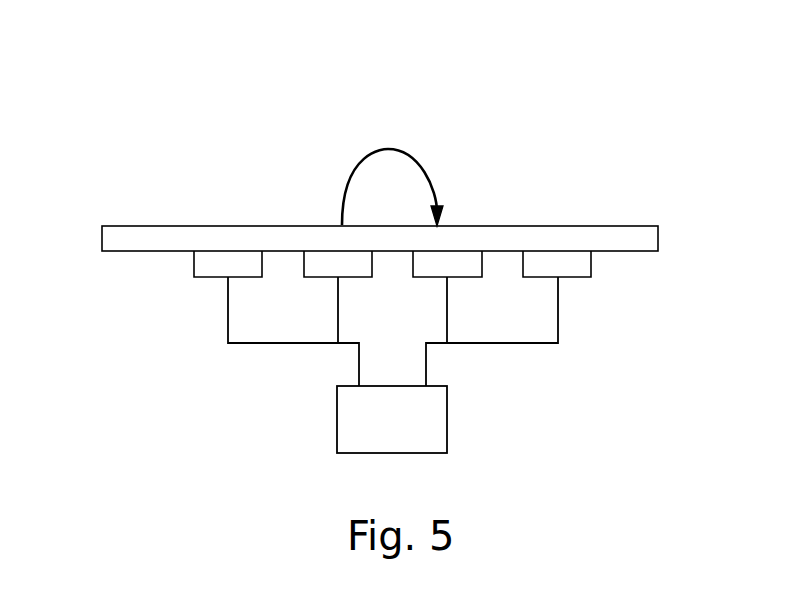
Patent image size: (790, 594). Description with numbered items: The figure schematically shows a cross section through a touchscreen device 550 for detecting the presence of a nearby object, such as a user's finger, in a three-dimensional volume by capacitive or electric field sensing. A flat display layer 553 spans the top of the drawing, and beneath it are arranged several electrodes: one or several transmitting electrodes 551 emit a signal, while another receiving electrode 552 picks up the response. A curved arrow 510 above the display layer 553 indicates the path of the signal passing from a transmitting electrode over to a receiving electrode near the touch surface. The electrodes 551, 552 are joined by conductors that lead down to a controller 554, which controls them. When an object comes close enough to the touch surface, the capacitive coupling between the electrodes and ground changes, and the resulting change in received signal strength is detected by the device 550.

The device 550 is at (135, 117).
The incident light 510 is at (385, 148).
The electrodes 551 is at (226, 253).
The electrode 552 is at (570, 273).
The display layer 553 is at (660, 251).
The controller 554 is at (447, 420).